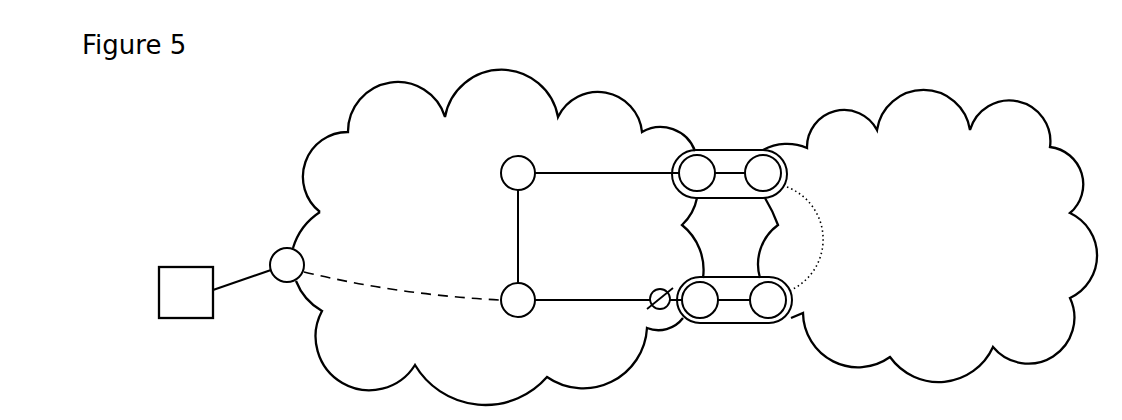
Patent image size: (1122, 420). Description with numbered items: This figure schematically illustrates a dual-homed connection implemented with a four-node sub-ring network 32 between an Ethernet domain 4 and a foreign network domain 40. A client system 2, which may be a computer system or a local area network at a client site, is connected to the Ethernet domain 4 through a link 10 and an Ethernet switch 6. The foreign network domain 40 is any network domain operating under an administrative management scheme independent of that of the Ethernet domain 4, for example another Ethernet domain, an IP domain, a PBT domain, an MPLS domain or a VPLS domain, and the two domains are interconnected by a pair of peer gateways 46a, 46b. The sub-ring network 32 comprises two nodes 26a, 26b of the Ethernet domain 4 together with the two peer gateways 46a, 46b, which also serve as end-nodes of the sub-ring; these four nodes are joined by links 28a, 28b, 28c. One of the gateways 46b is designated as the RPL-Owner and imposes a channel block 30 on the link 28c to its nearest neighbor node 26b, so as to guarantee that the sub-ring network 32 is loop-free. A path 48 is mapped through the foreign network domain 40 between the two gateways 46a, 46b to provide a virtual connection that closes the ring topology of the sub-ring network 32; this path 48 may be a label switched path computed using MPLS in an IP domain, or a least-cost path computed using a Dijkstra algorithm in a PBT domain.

The client system 2 is at (167, 267).
The Ethernet network domain 4 is at (360, 221).
The Ethernet switch 6 is at (268, 250).
The link 10 is at (242, 283).
The node 26a is at (510, 167).
The node 26b is at (510, 317).
The link 28a is at (580, 171).
The link 28b is at (518, 240).
The link 28c is at (599, 302).
The channel block 30 is at (650, 287).
The sub-ring network 32 is at (552, 132).
The foreign network domain 40 is at (952, 216).
The peer gateway 46a is at (727, 150).
The peer gateway 46b is at (729, 323).
The path 48 is at (818, 240).